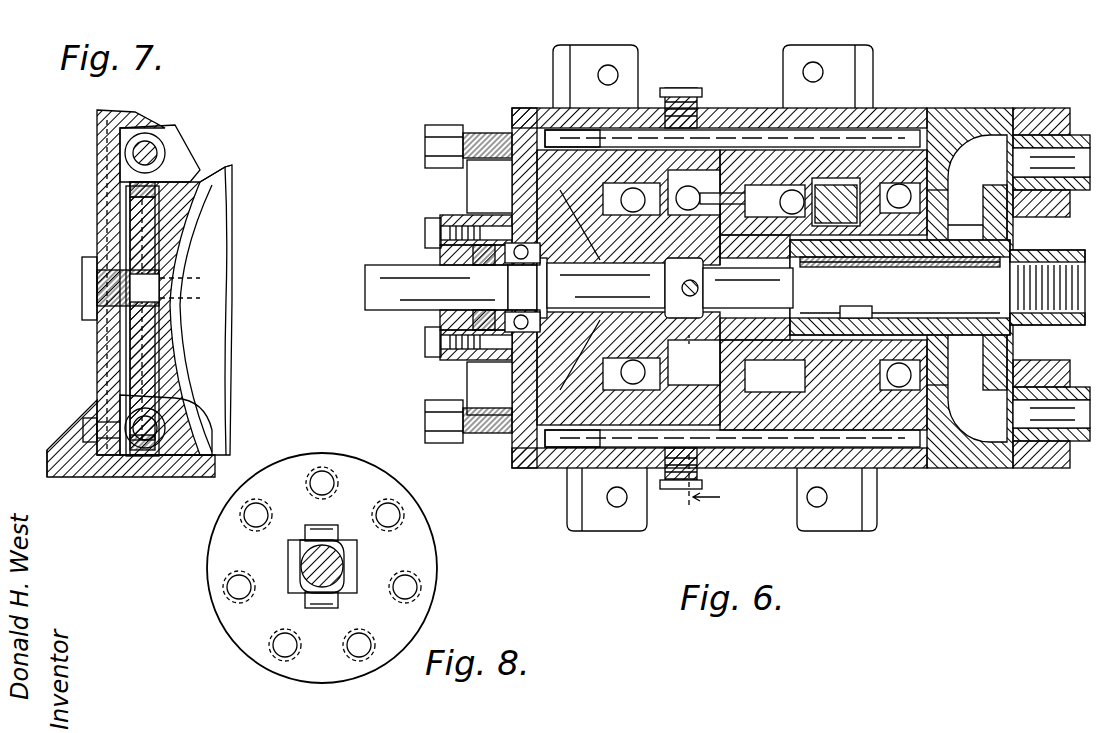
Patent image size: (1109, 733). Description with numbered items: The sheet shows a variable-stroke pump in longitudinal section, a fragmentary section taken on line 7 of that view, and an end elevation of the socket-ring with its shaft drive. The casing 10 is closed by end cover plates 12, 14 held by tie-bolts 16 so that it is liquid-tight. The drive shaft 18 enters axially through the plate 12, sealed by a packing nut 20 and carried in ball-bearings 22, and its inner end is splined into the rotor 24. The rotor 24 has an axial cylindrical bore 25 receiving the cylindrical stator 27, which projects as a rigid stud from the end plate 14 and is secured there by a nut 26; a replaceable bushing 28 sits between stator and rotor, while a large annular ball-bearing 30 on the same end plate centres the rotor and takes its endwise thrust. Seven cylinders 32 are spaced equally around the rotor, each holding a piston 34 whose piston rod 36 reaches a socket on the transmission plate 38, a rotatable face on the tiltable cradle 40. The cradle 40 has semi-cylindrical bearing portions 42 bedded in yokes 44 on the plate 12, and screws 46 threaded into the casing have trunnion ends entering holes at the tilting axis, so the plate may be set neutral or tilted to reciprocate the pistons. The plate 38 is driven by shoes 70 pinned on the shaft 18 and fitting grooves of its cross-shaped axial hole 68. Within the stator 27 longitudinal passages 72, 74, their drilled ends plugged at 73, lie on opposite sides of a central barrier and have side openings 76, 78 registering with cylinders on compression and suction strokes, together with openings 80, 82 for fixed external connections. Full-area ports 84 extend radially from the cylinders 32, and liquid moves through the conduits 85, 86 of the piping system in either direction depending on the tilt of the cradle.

In FIG. 6, the section line 7— 7 is at (733, 358).
In FIG. 7, the casing 10 is at (97, 160).
In FIG. 6, the casing 10 is at (755, 108).
In FIG. 6, the end cover plate 12 is at (512, 188).
In FIG. 6, the end cover plate 14 is at (955, 125).
In FIG. 7, the tie-bolts 16 is at (160, 150).
In FIG. 6, the tie-bolts 16 is at (425, 146).
In FIG. 8, the drive shaft 18 is at (335, 560).
In FIG. 6, the drive shaft 18 is at (380, 265).
In FIG. 6, the packing nut 20 is at (440, 222).
In FIG. 6, the ball-bearings 22 is at (512, 372).
In FIG. 6, the rotor 24 is at (790, 395).
In FIG. 6, the axial cylindrical bore 25 is at (815, 395).
In FIG. 6, the nut 26 is at (1060, 255).
In FIG. 6, the stator 27 is at (900, 287).
In FIG. 6, the bushing 28 is at (860, 430).
In FIG. 6, the annular ball-bearing 30 is at (920, 180).
In FIG. 6, the cylinders 32 is at (840, 195).
In FIG. 6, the piston 34 is at (815, 195).
In FIG. 6, the piston rod 36 is at (722, 195).
In FIG. 7, the transmission plate 38 is at (215, 218).
In FIG. 8, the transmission plate 38 is at (295, 460).
In FIG. 6, the transmission plate 38 is at (690, 150).
In FIG. 7, the cradle 40 is at (222, 170).
In FIG. 6, the cradle 40 is at (640, 468).
In FIG. 7, the semi-cylindrical bearing portions 42 is at (142, 212).
In FIG. 6, the semi-cylindrical bearing portions 42 is at (600, 140).
In FIG. 7, the yokes 44 is at (142, 190).
In FIG. 6, the yokes 44 is at (575, 140).
In FIG. 7, the screws 46 is at (82, 286).
In FIG. 6, the screws 46 is at (690, 100).
In FIG. 8, the axial hole 68 is at (290, 551).
In FIG. 8, the shoes 70 is at (336, 530).
In FIG. 6, the longitudinal passage 72 is at (900, 265).
In FIG. 6, the plug 73 is at (745, 245).
In FIG. 6, the longitudinal passage 74 is at (925, 345).
In FIG. 6, the side opening 76 is at (925, 215).
In FIG. 6, the side opening 78 is at (856, 309).
In FIG. 6, the opening 80 is at (925, 232).
In FIG. 6, the opening 82 is at (940, 300).
In FIG. 6, the cylinder ports 84 is at (925, 200).
In FIG. 6, the conduit 85 is at (977, 386).
In FIG. 6, the conduit 86 is at (977, 191).